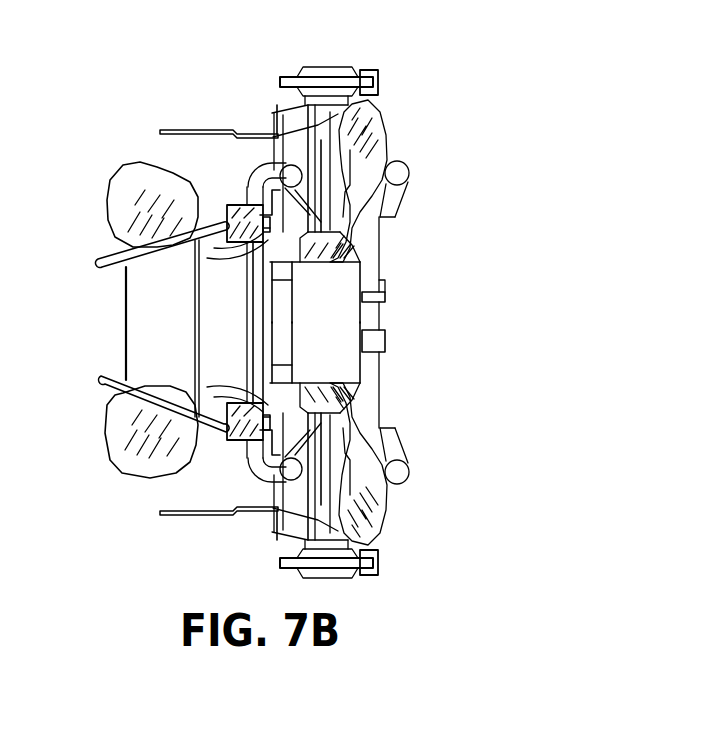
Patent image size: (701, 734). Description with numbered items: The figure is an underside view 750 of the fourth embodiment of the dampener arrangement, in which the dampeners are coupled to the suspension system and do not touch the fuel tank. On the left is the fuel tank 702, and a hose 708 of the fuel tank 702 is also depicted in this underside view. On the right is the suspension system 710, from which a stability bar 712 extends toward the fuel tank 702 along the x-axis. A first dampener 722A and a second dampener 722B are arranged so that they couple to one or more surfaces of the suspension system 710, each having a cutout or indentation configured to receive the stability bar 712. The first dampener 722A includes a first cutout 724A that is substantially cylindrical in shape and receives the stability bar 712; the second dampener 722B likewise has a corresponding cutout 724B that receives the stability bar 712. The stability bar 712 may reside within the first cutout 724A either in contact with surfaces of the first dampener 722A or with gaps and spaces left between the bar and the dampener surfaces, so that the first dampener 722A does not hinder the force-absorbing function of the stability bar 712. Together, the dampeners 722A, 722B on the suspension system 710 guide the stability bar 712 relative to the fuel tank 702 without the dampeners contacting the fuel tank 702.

The underside view 750 is at (425, 40).
The fuel tank 702 is at (111, 204).
The hose 708 is at (203, 260).
The suspension system 710 is at (396, 220).
The stability bar 712 is at (247, 327).
The first dampener 722A is at (233, 205).
The second dampener 722B is at (227, 440).
The first cutout 724A is at (269, 238).
The second gap 724B is at (269, 406).